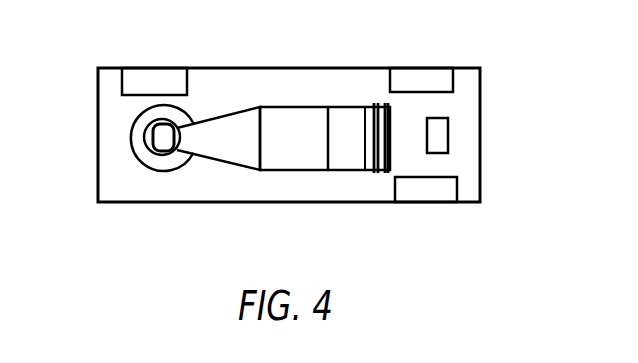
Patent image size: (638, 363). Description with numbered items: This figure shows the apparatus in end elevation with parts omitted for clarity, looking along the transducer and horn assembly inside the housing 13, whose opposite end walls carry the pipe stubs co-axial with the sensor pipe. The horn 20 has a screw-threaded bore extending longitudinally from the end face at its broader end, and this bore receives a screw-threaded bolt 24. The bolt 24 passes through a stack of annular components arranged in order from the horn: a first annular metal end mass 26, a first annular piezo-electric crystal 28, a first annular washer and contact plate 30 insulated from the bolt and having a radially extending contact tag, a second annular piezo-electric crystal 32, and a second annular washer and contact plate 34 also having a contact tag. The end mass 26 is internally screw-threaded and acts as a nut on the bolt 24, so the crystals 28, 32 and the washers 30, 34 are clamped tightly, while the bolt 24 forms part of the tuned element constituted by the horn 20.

The housing 13 is at (120, 203).
The horn 20 is at (243, 156).
The screw-threaded bolt 24 is at (450, 130).
The first annular metal end mass 26 is at (335, 117).
The first annular piezo-electric crystal 28 is at (371, 173).
The first annular washer and contact plate 30 is at (373, 103).
The second annular piezo-electric crystal 32 is at (385, 173).
The second annular washer and contact plate 34 is at (386, 103).